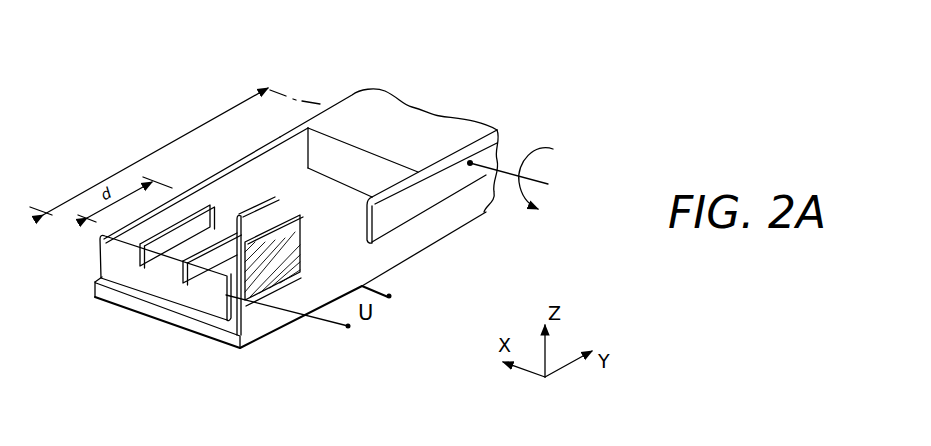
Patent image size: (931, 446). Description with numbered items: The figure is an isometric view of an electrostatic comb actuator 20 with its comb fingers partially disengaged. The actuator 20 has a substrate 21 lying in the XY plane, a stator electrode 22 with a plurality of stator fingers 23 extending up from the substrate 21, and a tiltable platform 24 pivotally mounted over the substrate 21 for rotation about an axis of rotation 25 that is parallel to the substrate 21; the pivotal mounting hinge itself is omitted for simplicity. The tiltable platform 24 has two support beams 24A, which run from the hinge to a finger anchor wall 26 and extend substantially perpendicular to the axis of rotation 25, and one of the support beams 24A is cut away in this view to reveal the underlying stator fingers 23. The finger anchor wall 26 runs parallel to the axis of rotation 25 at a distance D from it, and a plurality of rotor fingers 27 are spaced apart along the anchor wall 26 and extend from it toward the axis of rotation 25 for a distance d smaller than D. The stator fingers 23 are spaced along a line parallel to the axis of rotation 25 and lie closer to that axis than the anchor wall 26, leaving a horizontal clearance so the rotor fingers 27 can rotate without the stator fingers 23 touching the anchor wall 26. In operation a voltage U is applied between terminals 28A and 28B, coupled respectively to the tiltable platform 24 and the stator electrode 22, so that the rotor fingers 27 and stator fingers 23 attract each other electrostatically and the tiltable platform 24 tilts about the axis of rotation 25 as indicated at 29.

The electrostatic comb actuator 20 is at (532, 62).
The substrate 21 is at (252, 344).
The stator electrode 22 is at (283, 300).
The stator fingers 23 is at (248, 222).
The tiltable platform 24 is at (395, 138).
The support beams 24A is at (237, 163).
The axis of rotation 25 is at (272, 92).
The finger anchor wall 26 is at (146, 286).
The rotor fingers 27 is at (228, 278).
The terminal 28A is at (392, 298).
The terminal 28B is at (350, 328).
The tilt direction 29 is at (522, 171).